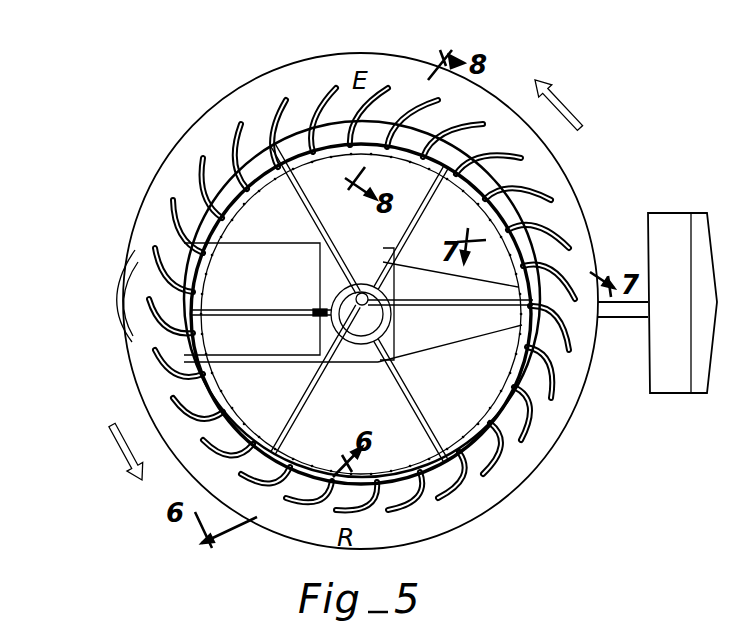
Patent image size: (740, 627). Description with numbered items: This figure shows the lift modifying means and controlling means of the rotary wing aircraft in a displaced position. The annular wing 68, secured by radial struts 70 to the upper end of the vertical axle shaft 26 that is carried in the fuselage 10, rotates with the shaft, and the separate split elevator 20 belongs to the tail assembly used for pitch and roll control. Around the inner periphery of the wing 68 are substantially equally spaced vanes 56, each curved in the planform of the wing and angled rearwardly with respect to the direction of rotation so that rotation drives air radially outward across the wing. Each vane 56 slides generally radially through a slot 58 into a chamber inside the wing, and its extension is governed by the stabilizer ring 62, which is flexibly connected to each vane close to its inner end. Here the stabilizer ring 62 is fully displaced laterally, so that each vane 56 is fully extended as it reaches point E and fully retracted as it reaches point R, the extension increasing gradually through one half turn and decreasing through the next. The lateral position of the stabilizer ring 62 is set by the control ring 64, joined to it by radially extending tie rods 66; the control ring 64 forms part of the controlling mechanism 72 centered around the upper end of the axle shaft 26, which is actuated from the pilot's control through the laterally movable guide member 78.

The fuselage 10 is at (110, 333).
The split elevator 20 is at (673, 383).
The axle shaft 26 is at (338, 290).
The vanes 56 is at (295, 132).
The slot 58 is at (318, 92).
The stabilizer ring 62 is at (347, 155).
The control ring 64 is at (397, 310).
The tie rods 66 is at (235, 310).
The wing 68 is at (218, 118).
The radial struts 70 is at (313, 216).
The controlling mechanism 72 is at (365, 265).
The guide member 78 is at (332, 340).